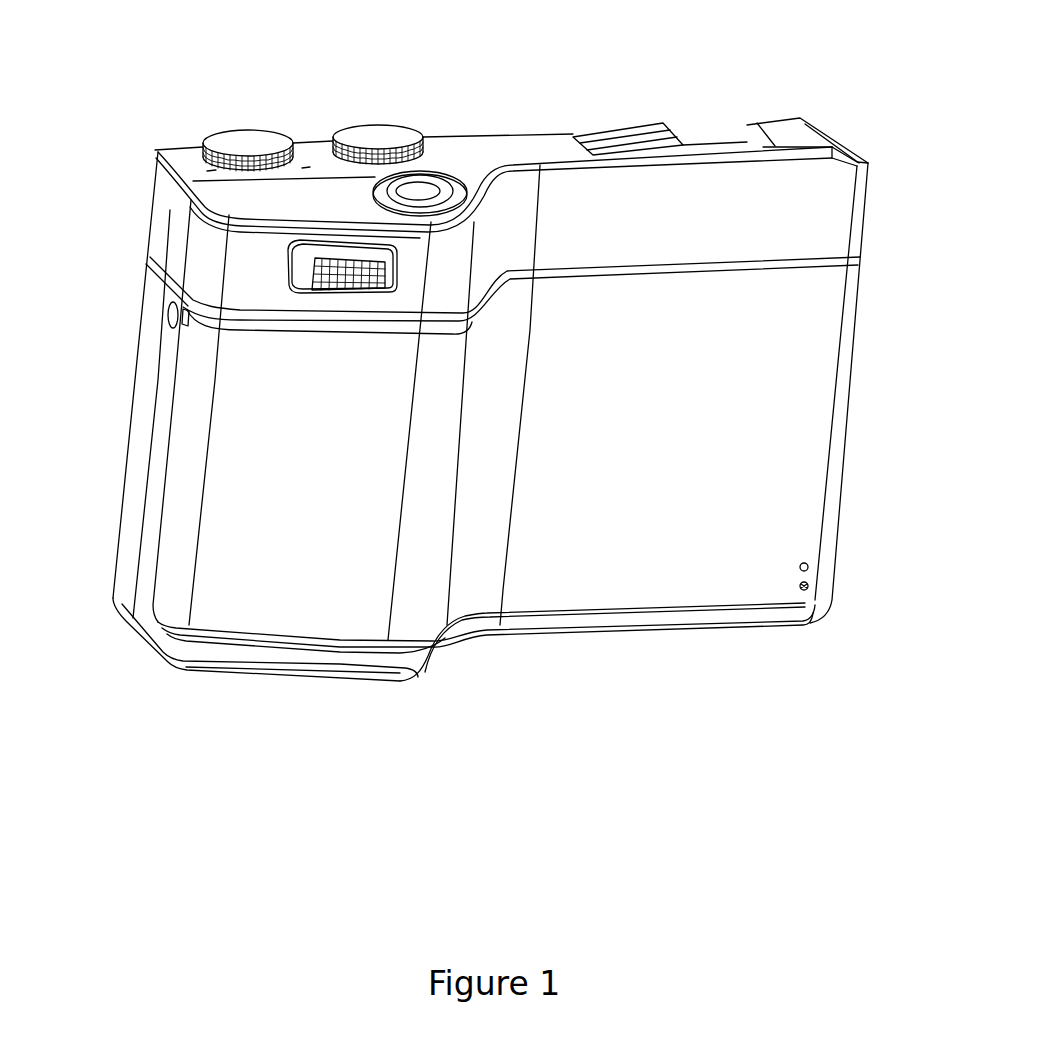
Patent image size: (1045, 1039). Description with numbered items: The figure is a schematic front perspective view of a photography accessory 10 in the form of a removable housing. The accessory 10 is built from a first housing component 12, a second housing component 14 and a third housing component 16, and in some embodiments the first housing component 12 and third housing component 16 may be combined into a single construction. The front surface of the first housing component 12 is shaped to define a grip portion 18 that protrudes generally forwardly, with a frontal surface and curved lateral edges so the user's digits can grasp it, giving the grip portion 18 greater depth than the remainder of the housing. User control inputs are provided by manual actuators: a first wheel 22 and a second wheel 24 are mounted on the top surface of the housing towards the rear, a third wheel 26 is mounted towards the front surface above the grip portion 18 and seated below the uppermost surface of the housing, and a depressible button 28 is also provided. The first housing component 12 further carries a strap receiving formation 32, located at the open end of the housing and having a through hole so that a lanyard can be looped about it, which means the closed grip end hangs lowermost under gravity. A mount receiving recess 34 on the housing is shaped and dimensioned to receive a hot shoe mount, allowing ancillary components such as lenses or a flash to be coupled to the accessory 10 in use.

The photography accessory 10 is at (336, 97).
The first housing component 12 is at (623, 293).
The second housing component 14 is at (293, 677).
The third housing component 16 is at (153, 483).
The grip portion 18 is at (292, 393).
The first wheel 22 is at (249, 128).
The second wheel 24 is at (389, 130).
The third wheel 26 is at (327, 270).
The depressible button 28 is at (432, 187).
The strap receiving formation 32 is at (812, 568).
The mount receiving recess 34 is at (722, 127).